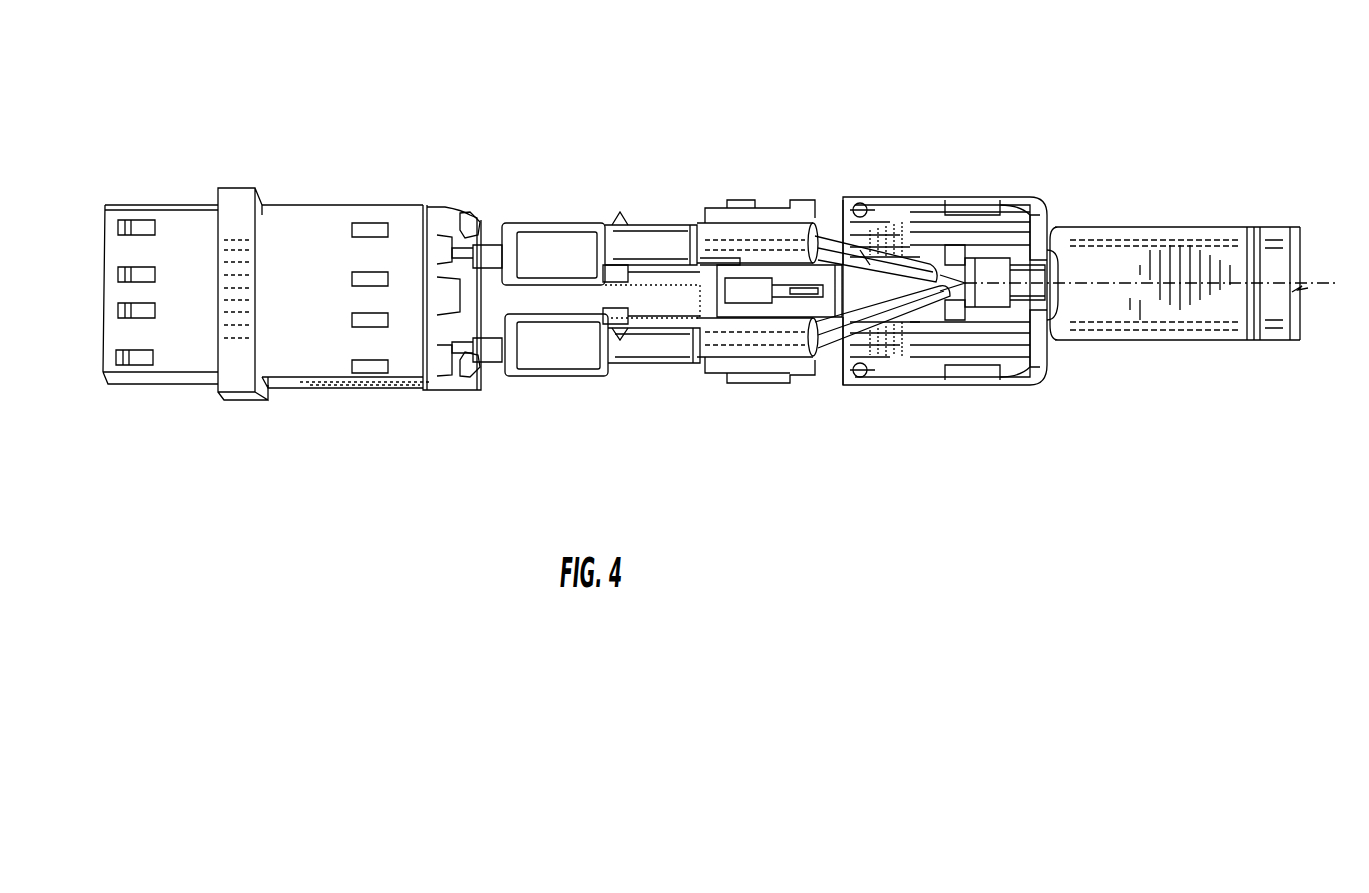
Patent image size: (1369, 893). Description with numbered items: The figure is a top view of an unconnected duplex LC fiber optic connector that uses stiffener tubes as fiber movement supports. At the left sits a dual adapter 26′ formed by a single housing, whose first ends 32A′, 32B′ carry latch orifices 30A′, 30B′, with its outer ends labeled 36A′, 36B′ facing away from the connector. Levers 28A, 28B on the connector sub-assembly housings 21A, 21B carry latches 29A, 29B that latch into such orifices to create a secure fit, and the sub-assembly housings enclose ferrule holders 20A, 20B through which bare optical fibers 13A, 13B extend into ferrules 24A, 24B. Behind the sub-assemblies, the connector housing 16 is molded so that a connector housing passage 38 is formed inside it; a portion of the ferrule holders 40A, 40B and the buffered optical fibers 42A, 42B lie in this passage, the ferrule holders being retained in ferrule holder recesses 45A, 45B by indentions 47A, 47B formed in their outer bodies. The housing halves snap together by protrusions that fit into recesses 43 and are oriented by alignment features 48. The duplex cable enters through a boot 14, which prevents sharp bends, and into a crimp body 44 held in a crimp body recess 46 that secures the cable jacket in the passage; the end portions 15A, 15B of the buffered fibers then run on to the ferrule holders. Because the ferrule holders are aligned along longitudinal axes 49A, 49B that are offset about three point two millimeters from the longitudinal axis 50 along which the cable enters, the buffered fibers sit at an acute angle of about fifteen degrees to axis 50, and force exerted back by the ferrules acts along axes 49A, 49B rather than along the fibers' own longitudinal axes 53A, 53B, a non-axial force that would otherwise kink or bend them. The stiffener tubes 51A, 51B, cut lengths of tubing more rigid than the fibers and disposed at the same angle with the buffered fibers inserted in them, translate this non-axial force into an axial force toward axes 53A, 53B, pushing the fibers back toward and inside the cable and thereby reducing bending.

The upper latch arm of plug 36A′ is at (103, 222).
The lower latch arm of plug 36B′ is at (102, 350).
The dual adapter 26′ is at (285, 170).
The latch orifice 30A′ is at (373, 277).
The latch orifice 30B′ is at (383, 375).
The first end 32A′ is at (462, 226).
The first end 32B′ is at (443, 362).
The bare optical fiber 13A is at (476, 215).
The bare optical fiber 13B is at (470, 366).
The ferrule 24A is at (488, 242).
The ferrule 24B is at (488, 362).
The latch 29A is at (580, 224).
The latch 29B is at (567, 377).
The indention 47A is at (621, 213).
The indention 47B is at (720, 303).
The connector sub-assembly housing 21A is at (612, 282).
The connector sub-assembly housing 21B is at (609, 398).
The lever 28A is at (660, 233).
The lever 28B is at (652, 350).
The ferrule holder 20A is at (708, 225).
The ferrule holder 20B is at (727, 382).
The recess 43 is at (773, 208).
The ferrule holder 40A is at (752, 228).
The ferrule holder 40B is at (745, 372).
The connector housing passage 38 is at (862, 256).
The longitudinal axis 49A is at (693, 226).
The longitudinal axis 49B is at (690, 382).
The ferrule holder recess 45A is at (812, 205).
The ferrule holder recess 45B is at (808, 378).
The alignment feature 48 is at (864, 204).
The connector housing 16 is at (888, 216).
The end portion 15A is at (956, 200).
The end portion 15B is at (898, 352).
The stiffener tube 51A is at (912, 252).
The stiffener tube 51B is at (920, 322).
The longitudinal axis 53A is at (935, 242).
The longitudinal axis 53B is at (893, 362).
The buffered optical fiber 42A is at (1014, 200).
The buffered optical fiber 42B is at (1013, 344).
The crimp body recess 46 is at (1047, 332).
The crimp body 44 is at (1058, 224).
The boot 14 is at (1125, 224).
The longitudinal axis 50 is at (1320, 290).